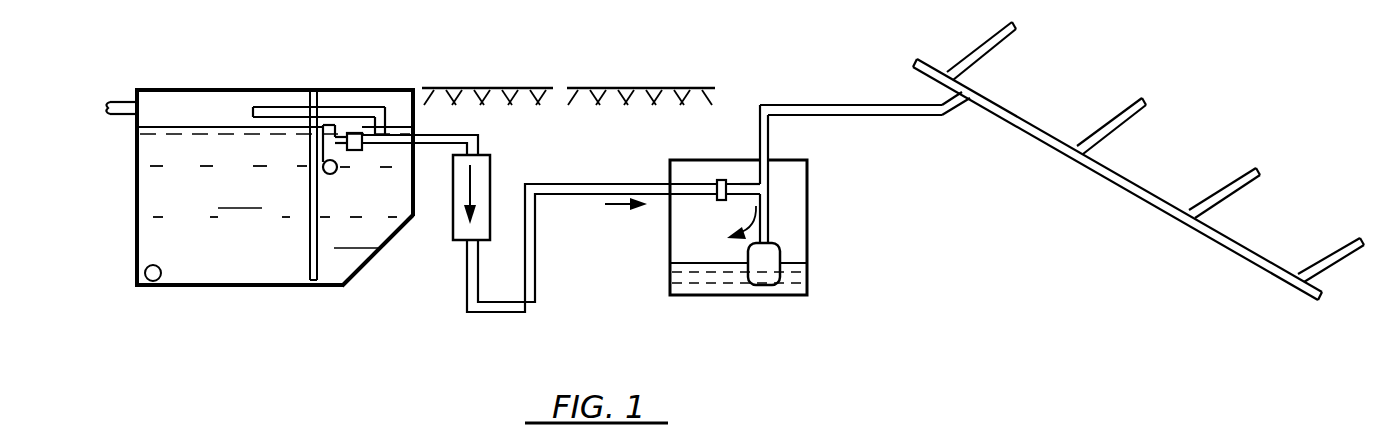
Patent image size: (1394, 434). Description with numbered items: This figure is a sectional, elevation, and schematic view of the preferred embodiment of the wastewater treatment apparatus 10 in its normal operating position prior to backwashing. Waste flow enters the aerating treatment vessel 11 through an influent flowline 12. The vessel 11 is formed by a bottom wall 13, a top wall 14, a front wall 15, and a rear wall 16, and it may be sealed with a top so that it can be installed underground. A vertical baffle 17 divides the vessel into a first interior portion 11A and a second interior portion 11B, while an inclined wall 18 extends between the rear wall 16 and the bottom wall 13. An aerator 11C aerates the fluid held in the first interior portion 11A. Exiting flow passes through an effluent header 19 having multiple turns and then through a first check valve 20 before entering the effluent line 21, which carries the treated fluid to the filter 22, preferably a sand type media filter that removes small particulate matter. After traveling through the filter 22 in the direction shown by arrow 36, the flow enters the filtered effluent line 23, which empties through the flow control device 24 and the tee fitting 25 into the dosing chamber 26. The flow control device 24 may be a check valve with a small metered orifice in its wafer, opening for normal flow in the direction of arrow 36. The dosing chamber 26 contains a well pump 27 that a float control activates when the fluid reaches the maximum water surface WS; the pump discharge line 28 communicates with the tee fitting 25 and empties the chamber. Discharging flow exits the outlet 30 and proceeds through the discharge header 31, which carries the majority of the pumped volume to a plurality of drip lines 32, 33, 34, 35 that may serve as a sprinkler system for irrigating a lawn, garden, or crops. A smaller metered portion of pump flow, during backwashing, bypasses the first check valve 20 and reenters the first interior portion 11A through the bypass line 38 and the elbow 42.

The ground surface 10 is at (691, 84).
The aerating treatment vessel 11 is at (165, 88).
The first interior portion 11A is at (228, 191).
The second interior portion 11B is at (358, 208).
The aerator 11C is at (162, 277).
The influent flowline 12 is at (123, 101).
The bottom wall 13 is at (221, 287).
The top wall 14 is at (290, 90).
The front wall 15 is at (137, 214).
The rear wall 16 is at (418, 104).
The vertical baffle 17 is at (308, 242).
The inclined wall 18 is at (369, 268).
The effluent header 19 is at (336, 171).
The first check valve 20 is at (360, 150).
The effluent line 21 is at (462, 135).
The filter 22 is at (490, 178).
The filtered effluent line 23 is at (493, 314).
The flow control device 24 is at (729, 185).
The tee fitting 25 is at (755, 197).
The dosing chamber 26 is at (691, 286).
The well pump 27 is at (784, 273).
The pump discharge line 28 is at (766, 224).
The outlet 30 is at (770, 158).
The discharge header 31 is at (900, 117).
The drip line 32 is at (984, 47).
The drip line 33 is at (1128, 112).
The drip line 34 is at (1236, 189).
The drip line 35 is at (1334, 262).
The arrow 36 is at (453, 181).
The bypass line 38 is at (352, 107).
The elbow 42 is at (388, 112).
The maximum water surface WS is at (796, 262).